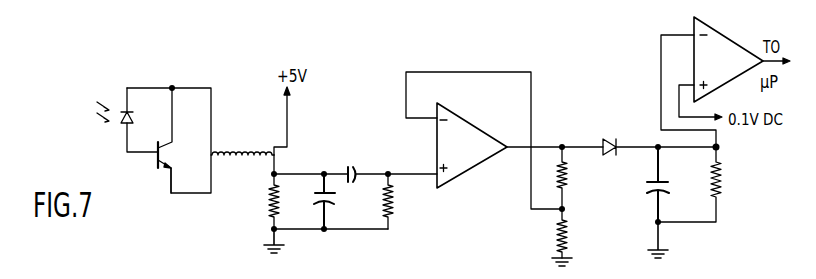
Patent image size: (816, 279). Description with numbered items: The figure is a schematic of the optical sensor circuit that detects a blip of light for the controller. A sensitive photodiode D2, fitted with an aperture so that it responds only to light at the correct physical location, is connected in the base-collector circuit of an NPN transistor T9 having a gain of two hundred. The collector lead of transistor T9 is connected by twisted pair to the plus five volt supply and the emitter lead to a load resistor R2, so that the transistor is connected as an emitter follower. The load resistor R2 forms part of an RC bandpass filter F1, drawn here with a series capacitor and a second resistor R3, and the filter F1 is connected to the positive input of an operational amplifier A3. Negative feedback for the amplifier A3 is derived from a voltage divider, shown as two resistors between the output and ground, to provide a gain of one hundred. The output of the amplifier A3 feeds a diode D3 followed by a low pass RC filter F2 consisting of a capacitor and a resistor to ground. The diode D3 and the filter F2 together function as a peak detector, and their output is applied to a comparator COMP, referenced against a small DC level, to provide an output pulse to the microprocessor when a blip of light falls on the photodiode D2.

The photodiode D2 is at (126, 116).
The NPN transistor T9 is at (175, 140).
The load resistor R2 is at (263, 201).
The resistor R3 is at (398, 201).
The RC bandpass filter F1 is at (338, 211).
The operational amplifier A3 is at (472, 145).
The diode D3 is at (607, 132).
The low pass RC filter F2 is at (684, 202).
The comparator COMP is at (728, 59).